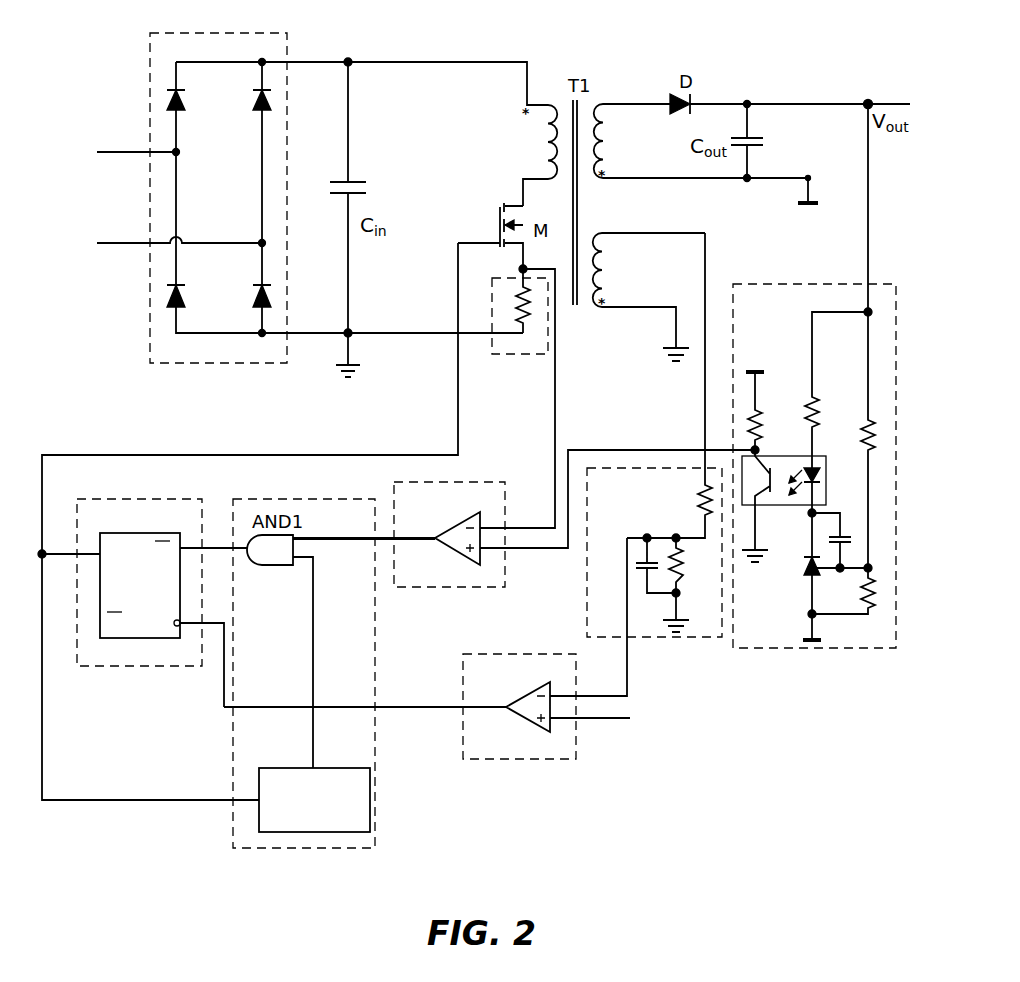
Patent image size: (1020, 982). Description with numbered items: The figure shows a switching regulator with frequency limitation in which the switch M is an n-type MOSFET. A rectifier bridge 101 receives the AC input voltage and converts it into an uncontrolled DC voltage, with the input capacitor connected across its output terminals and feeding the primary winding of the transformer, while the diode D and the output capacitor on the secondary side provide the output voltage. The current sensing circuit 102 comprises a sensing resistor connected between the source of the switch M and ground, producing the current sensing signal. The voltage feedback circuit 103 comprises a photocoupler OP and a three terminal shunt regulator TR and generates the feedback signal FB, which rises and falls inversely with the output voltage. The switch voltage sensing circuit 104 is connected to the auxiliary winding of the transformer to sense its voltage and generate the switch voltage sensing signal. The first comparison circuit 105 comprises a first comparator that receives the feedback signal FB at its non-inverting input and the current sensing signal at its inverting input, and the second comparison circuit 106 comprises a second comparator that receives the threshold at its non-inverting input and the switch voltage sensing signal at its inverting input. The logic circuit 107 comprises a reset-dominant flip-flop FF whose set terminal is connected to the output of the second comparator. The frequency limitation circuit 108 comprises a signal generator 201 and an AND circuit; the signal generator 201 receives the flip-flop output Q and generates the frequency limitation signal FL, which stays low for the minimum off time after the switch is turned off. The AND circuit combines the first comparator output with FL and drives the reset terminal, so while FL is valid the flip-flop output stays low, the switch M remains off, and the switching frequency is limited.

The rectifier bridge 101 is at (150, 305).
The current sensing circuit 102 is at (498, 355).
The voltage feedback circuit 103 is at (818, 650).
The switch voltage sensing circuit 104 is at (587, 604).
The first comparison circuit 105 is at (440, 589).
The second comparison circuit 106 is at (520, 760).
The logic circuit 107 is at (125, 668).
The frequency limitation circuit 108 is at (233, 805).
The signal generator 201 is at (305, 768).